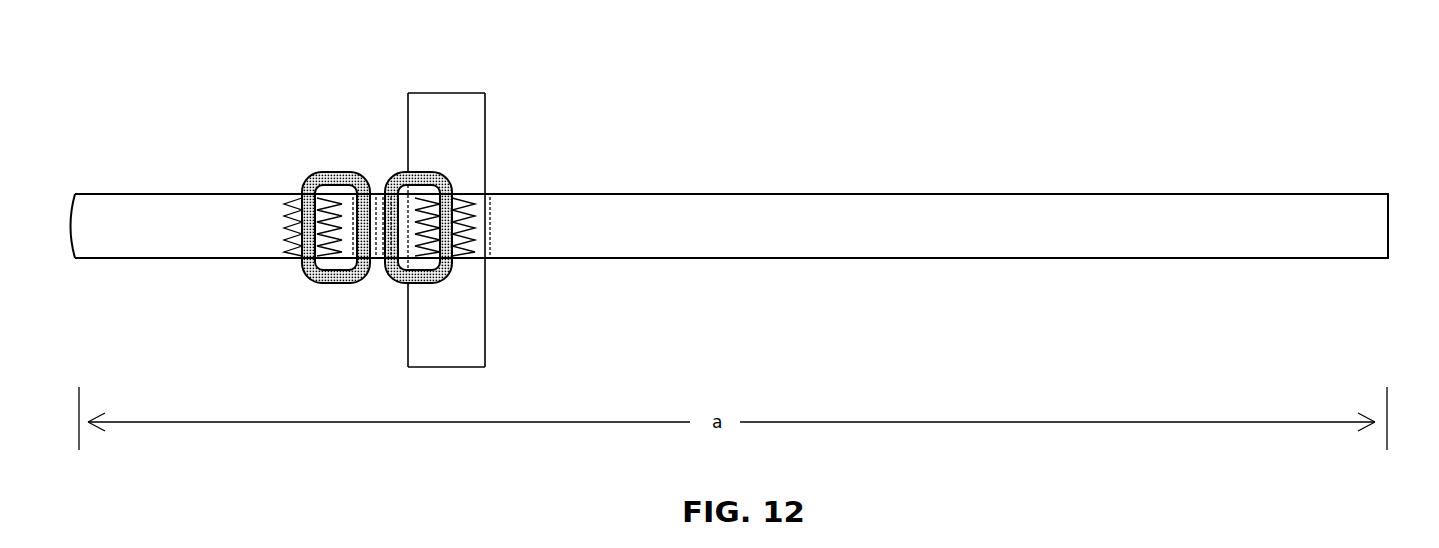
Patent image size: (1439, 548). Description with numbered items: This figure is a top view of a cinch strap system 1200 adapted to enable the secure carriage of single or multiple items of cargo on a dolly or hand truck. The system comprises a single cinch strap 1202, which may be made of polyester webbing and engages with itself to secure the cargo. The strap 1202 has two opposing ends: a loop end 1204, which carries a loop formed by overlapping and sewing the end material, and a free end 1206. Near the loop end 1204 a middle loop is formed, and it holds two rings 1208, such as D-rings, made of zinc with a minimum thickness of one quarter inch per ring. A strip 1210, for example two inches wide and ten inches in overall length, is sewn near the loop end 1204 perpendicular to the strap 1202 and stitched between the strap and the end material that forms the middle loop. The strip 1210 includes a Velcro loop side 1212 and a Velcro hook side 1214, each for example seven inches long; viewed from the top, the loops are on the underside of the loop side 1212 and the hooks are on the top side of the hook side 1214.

The cinch strap system 1200 is at (804, 86).
The single cinch strap 1202 is at (835, 215).
The loop end 1204 is at (73, 195).
The free end 1206 is at (1388, 194).
The rings 1208 is at (318, 175).
The strip 1210 is at (460, 160).
The Velcro loop side 1212 is at (487, 102).
The Velcro hook side 1214 is at (407, 322).